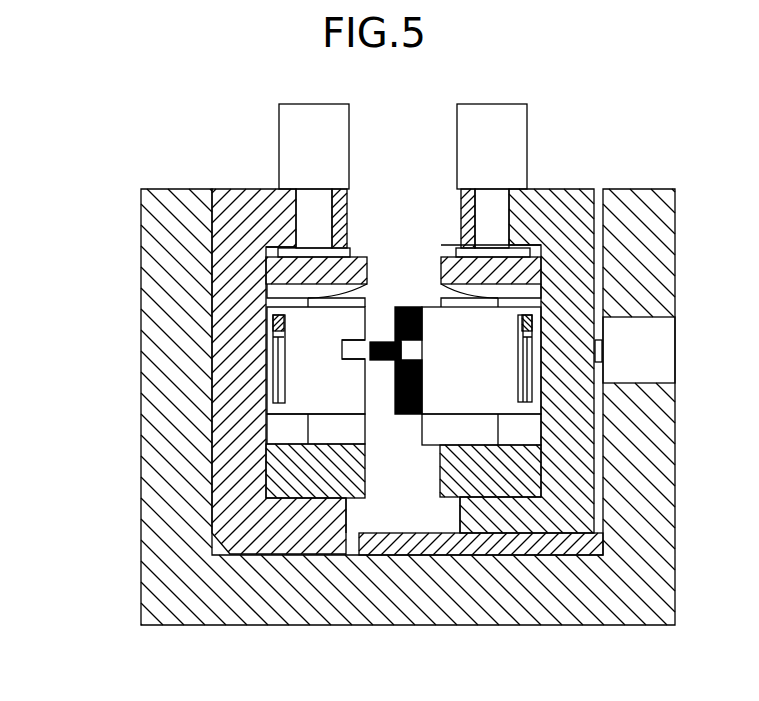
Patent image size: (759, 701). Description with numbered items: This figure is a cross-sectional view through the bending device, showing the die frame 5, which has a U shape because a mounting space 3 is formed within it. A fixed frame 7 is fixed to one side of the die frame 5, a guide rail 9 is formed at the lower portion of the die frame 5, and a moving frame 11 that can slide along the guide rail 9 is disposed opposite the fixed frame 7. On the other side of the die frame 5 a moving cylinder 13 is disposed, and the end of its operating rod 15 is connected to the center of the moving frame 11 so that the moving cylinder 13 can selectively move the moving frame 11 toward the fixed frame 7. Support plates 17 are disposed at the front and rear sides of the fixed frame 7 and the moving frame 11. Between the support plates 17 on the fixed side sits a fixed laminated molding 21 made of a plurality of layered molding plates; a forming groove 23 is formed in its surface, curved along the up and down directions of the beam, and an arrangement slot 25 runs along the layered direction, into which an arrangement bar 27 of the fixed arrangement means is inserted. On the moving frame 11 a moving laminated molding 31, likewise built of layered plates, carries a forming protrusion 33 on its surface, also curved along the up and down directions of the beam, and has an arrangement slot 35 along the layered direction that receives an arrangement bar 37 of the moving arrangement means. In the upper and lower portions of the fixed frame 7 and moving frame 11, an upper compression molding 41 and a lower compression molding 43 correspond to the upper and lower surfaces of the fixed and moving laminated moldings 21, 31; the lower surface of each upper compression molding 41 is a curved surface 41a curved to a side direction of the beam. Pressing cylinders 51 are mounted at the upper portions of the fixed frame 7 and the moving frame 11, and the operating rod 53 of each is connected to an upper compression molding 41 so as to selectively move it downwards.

The mounting space 3 is at (433, 224).
The die frame 5 is at (358, 608).
The fixed frame 7 is at (238, 470).
The guide rail 9 is at (457, 545).
The moving frame 11 is at (582, 485).
The moving cylinder 13 is at (663, 332).
The operating rod 15 is at (605, 385).
The support plates 17 is at (273, 430).
The fixed laminated molding 21 is at (363, 304).
The forming groove 23 is at (355, 353).
The arrangement slot 25 is at (273, 381).
The arrangement bar 27 is at (267, 322).
The moving laminated molding 31 is at (406, 304).
The forming protrusion 33 is at (382, 362).
The arrangement slot 35 is at (527, 381).
The arrangement bar 37 is at (520, 320).
The upper compression molding 41 is at (450, 268).
The curved surface 41a is at (310, 298).
The lower compression molding 43 is at (440, 468).
The pressing cylinders 51 is at (293, 140).
The operating rod 53 is at (320, 198).